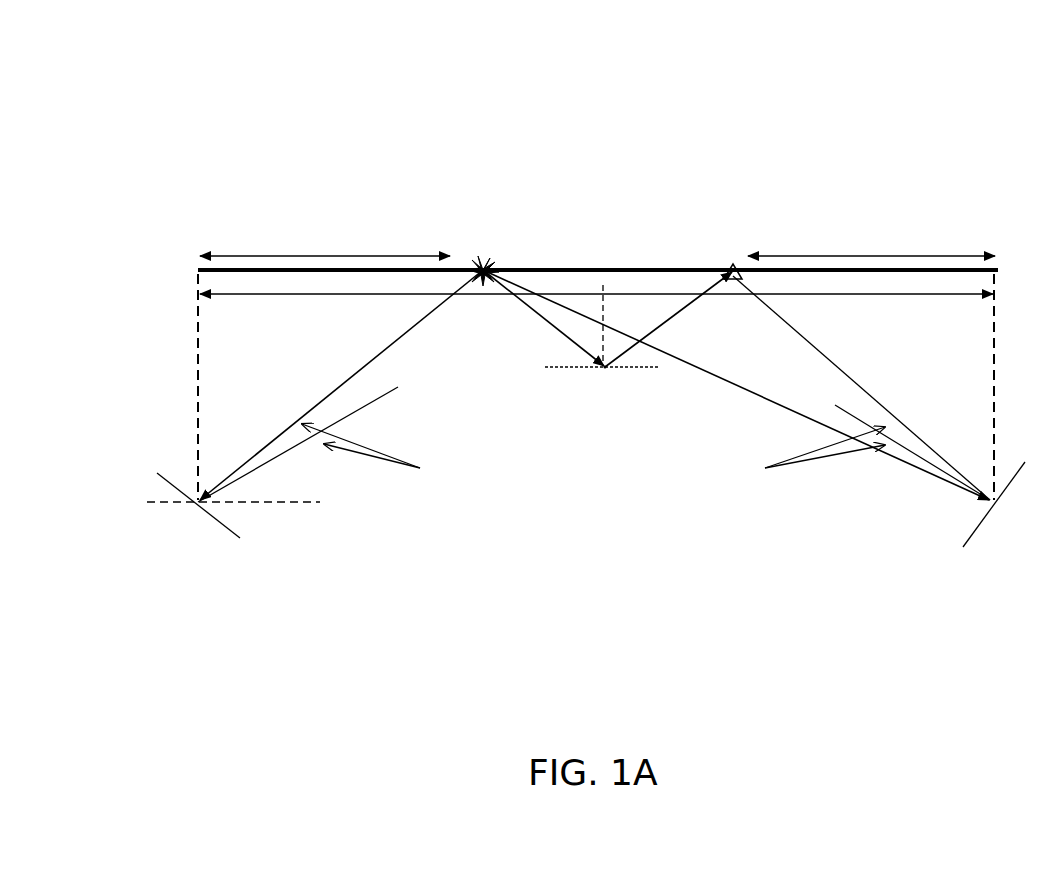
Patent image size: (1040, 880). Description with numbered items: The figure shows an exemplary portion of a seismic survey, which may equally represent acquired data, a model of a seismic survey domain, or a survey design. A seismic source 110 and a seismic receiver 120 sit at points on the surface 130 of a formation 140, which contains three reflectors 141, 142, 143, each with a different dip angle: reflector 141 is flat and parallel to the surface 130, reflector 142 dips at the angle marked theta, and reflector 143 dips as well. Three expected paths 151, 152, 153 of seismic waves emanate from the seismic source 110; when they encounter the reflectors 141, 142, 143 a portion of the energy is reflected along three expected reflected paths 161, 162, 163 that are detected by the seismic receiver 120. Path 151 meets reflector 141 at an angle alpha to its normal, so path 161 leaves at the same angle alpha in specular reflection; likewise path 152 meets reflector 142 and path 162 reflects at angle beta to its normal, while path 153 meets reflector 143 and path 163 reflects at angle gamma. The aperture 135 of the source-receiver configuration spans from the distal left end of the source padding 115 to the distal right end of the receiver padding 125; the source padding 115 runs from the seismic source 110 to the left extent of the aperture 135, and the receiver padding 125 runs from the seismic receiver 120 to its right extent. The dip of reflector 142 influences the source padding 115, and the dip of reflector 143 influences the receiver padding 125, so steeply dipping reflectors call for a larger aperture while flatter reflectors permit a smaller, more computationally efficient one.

The seismic source 110 is at (486, 262).
The source padding 115 is at (323, 245).
The seismic receiver 120 is at (728, 262).
The receiver padding 125 is at (850, 238).
The surface 130 is at (602, 262).
The aperture 135 is at (295, 290).
The formation 140 is at (600, 493).
The reflector 141 is at (620, 373).
The reflector 142 is at (220, 537).
The reflector 143 is at (966, 568).
The expected path 151 is at (510, 312).
The expected path 152 is at (430, 327).
The expected path 153 is at (708, 388).
The reflected path 161 is at (676, 330).
The reflected path 162 is at (441, 413).
The reflected path 163 is at (817, 377).